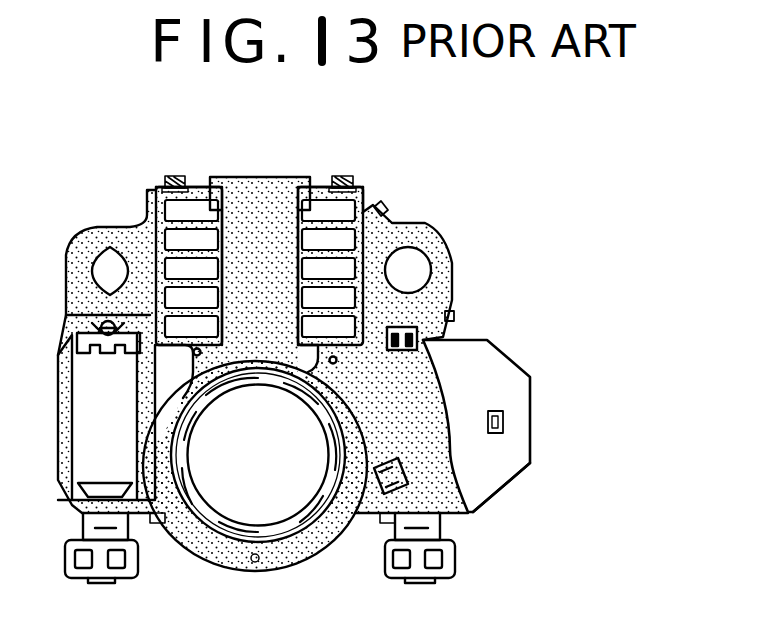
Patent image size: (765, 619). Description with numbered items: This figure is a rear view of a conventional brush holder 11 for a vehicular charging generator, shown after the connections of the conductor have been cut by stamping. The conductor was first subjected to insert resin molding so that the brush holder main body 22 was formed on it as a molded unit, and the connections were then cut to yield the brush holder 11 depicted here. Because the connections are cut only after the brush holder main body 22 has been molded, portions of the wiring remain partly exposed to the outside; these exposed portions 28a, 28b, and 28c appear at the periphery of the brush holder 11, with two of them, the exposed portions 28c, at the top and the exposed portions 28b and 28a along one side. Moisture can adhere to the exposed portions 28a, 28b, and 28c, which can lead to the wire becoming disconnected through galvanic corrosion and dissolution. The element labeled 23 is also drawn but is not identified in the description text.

The brush holder 11 is at (543, 380).
The brush holder main body 22 is at (500, 340).
The cover side wall 23 is at (510, 460).
The exposed portion 28a is at (455, 316).
The exposed portion 28b is at (385, 207).
The exposed portion 28c is at (176, 175).